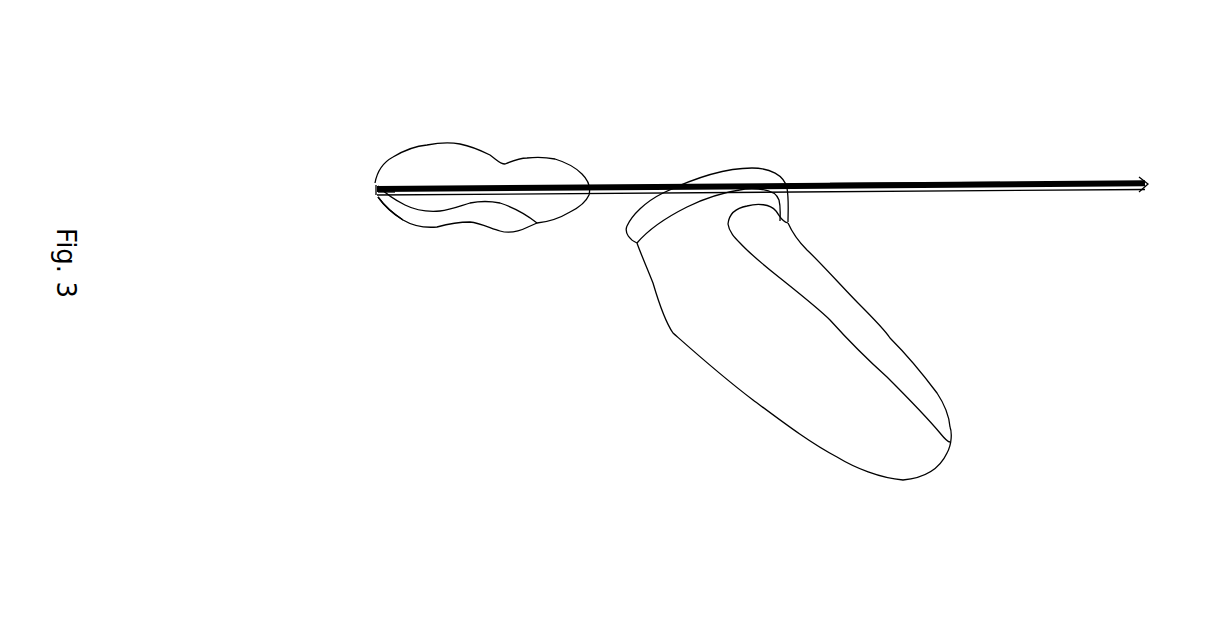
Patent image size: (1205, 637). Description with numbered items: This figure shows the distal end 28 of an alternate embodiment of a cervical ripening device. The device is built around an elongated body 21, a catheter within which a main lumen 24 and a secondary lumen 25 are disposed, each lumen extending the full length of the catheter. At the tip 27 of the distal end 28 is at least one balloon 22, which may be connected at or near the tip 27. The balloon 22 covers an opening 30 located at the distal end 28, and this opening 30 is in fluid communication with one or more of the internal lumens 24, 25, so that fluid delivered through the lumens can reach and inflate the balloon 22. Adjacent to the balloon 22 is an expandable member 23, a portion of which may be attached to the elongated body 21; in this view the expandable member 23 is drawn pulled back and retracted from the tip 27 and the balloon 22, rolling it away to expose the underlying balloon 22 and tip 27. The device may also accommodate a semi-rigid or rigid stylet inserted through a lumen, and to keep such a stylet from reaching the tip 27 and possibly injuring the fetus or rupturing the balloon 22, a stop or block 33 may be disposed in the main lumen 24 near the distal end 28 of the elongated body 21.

The elongated body 21 is at (1005, 196).
The balloon 22 is at (512, 158).
The expandable member 23 is at (950, 437).
The main lumen 24 is at (1095, 191).
The secondary lumen 25 is at (905, 182).
The tip 27 is at (385, 188).
The distal end 28 is at (335, 197).
The opening 30 is at (388, 196).
The stop or block 33 is at (612, 190).